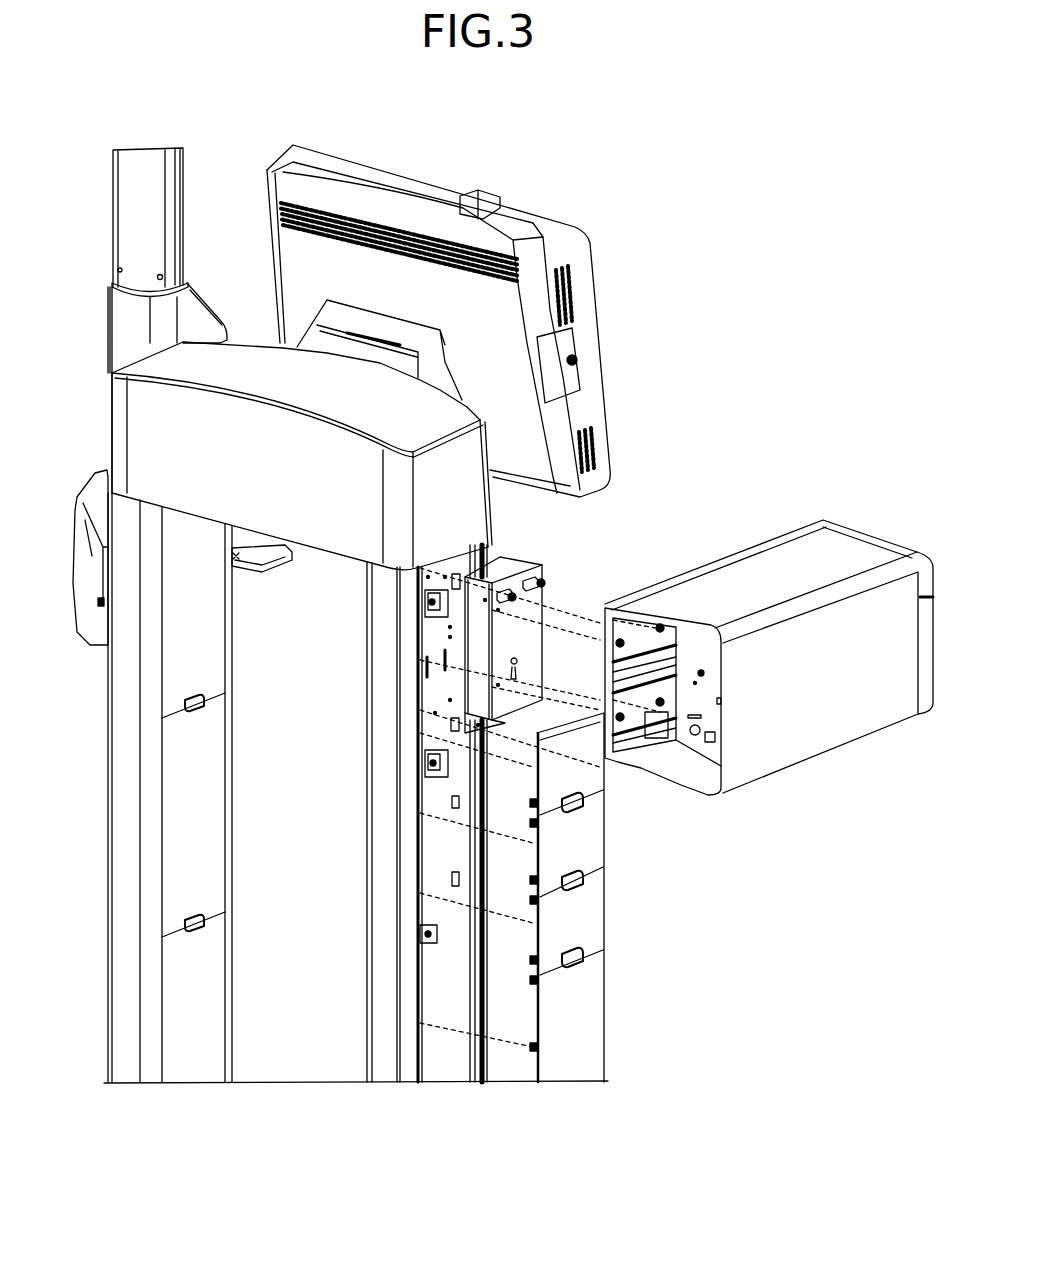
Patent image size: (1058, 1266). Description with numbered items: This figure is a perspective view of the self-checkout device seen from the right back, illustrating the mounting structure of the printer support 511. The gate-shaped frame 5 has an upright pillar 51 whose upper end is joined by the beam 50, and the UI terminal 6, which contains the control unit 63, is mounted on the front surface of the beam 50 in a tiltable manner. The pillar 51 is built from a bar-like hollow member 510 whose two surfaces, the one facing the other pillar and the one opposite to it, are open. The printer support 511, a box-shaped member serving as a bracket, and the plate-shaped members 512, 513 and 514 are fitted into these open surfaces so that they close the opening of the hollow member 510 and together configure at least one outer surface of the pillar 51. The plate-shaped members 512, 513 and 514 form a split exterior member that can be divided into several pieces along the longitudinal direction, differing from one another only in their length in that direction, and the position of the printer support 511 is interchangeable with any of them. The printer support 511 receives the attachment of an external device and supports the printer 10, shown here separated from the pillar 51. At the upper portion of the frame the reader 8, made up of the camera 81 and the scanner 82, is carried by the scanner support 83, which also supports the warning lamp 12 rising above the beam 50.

The gate-shaped frame 5 is at (386, 737).
The pillar 51 is at (108, 893).
The hollow member 510 is at (366, 1040).
The printer support 511 is at (519, 568).
The plate-shaped member 512 is at (607, 780).
The plate-shaped member 513 is at (592, 987).
The plate-shaped member 514 is at (300, 937).
The warning lamp 12 is at (128, 222).
The reader 8 is at (153, 448).
The scanner 82 is at (213, 312).
The scanner support 83 is at (75, 516).
The camera 81 is at (286, 560).
The beam 50 is at (140, 402).
The UI terminal 6 is at (438, 303).
The control unit 63 is at (390, 287).
The printer 10 is at (832, 720).